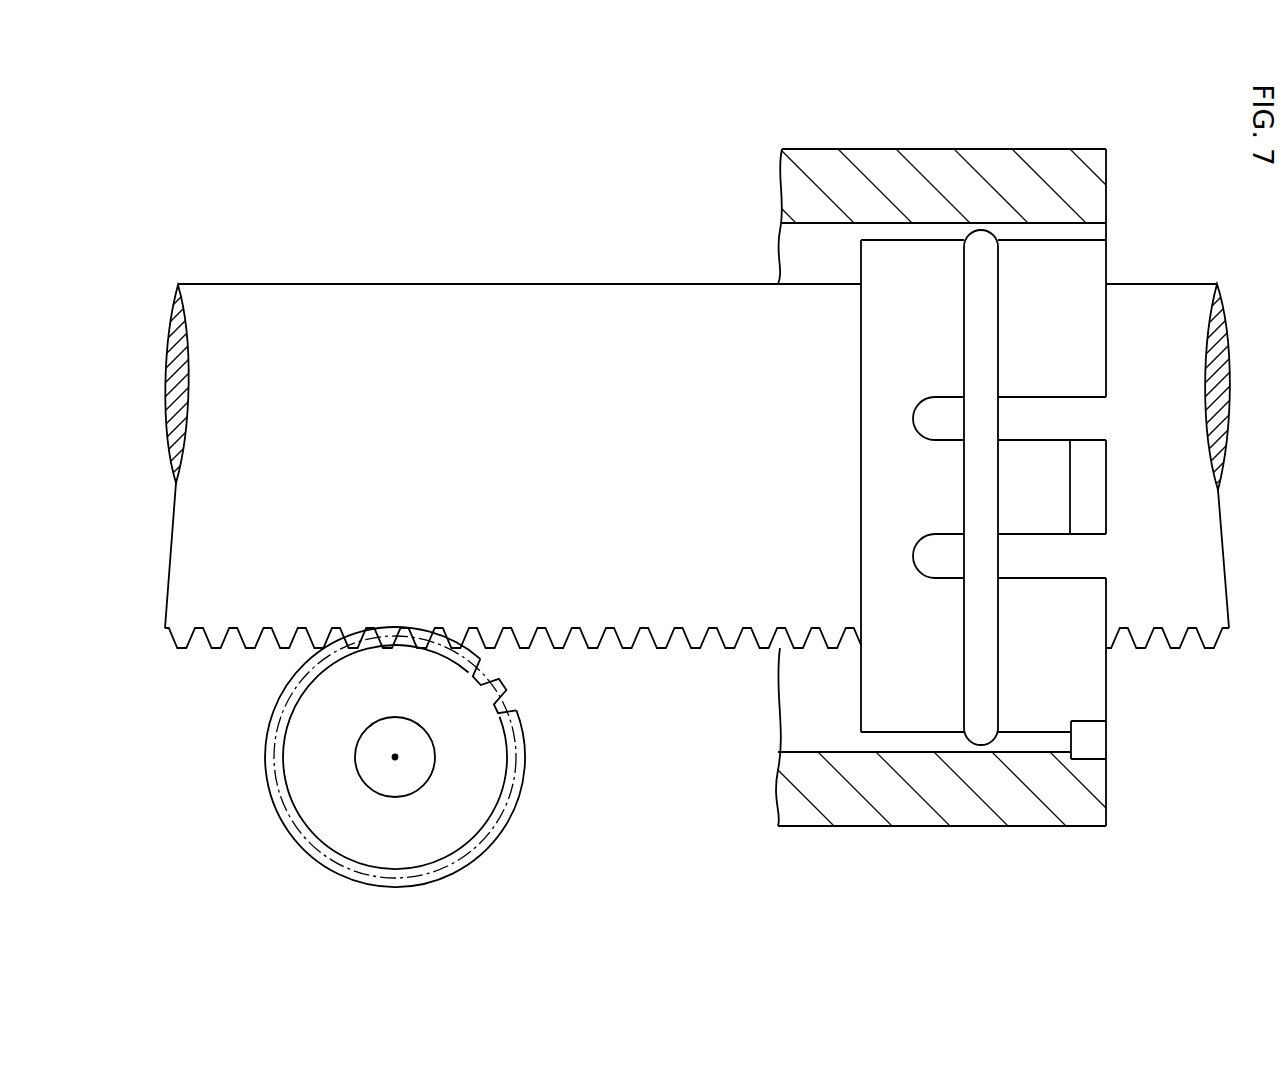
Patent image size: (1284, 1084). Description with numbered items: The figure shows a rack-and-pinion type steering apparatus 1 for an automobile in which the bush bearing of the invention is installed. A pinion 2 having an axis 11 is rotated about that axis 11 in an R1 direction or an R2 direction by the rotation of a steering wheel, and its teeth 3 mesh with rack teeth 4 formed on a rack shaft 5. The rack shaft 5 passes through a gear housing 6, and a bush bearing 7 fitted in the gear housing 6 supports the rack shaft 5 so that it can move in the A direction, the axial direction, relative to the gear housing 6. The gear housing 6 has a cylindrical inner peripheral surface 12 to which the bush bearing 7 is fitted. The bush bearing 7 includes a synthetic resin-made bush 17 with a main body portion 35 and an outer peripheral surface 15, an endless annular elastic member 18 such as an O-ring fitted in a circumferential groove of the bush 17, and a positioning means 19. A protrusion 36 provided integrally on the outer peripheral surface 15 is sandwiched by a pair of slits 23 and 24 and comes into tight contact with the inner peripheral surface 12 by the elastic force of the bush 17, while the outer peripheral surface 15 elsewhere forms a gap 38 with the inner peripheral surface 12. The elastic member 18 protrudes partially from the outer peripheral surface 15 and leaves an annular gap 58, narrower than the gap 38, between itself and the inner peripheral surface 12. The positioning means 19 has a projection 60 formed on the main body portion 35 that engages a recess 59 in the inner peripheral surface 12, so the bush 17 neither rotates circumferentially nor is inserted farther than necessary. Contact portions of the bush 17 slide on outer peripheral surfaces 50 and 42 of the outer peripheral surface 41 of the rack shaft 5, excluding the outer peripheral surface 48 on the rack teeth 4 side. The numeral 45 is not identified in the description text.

The rack-and-pinion type steering apparatus 1 is at (705, 226).
The pinion 2 is at (368, 848).
The teeth of the pinion 3 is at (520, 775).
The rack teeth 4 is at (622, 649).
The rack shaft 5 is at (328, 315).
The gear housing 6 is at (858, 810).
The bush bearing 7 is at (1125, 704).
The axis 11 is at (395, 757).
The inner peripheral surface 12 is at (832, 228).
The outer peripheral surface 15 is at (932, 740).
The bush 17 is at (845, 707).
The endless annular elastic member 18 is at (985, 245).
The positioning means 19 is at (1127, 752).
The slit 23 is at (1085, 413).
The slit 24 is at (1080, 553).
The main body portion 35 is at (1060, 255).
The protrusion 36 is at (1098, 466).
The gap 38 is at (930, 235).
The outer peripheral surface 41 is at (448, 340).
The outer peripheral surface 42 is at (1128, 485).
The contact portion 45 is at (1110, 300).
The outer peripheral surface 48 is at (228, 590).
The outer peripheral surface 50 is at (573, 300).
The annular gap 58 is at (985, 746).
The recess 59 is at (1080, 762).
The projection 60 is at (1092, 758).
The R1 direction R1 is at (339, 701).
The R2 direction R2 is at (339, 817).
The A direction A is at (635, 477).